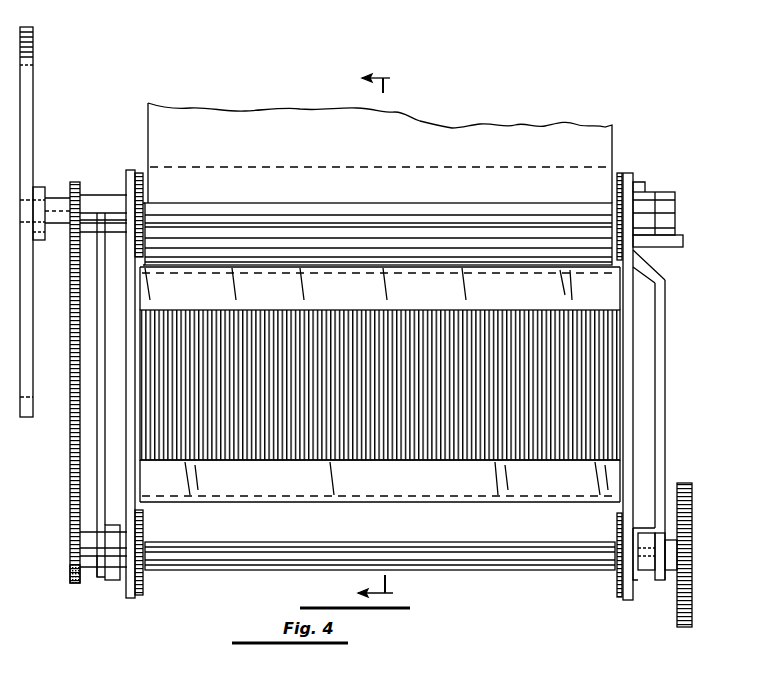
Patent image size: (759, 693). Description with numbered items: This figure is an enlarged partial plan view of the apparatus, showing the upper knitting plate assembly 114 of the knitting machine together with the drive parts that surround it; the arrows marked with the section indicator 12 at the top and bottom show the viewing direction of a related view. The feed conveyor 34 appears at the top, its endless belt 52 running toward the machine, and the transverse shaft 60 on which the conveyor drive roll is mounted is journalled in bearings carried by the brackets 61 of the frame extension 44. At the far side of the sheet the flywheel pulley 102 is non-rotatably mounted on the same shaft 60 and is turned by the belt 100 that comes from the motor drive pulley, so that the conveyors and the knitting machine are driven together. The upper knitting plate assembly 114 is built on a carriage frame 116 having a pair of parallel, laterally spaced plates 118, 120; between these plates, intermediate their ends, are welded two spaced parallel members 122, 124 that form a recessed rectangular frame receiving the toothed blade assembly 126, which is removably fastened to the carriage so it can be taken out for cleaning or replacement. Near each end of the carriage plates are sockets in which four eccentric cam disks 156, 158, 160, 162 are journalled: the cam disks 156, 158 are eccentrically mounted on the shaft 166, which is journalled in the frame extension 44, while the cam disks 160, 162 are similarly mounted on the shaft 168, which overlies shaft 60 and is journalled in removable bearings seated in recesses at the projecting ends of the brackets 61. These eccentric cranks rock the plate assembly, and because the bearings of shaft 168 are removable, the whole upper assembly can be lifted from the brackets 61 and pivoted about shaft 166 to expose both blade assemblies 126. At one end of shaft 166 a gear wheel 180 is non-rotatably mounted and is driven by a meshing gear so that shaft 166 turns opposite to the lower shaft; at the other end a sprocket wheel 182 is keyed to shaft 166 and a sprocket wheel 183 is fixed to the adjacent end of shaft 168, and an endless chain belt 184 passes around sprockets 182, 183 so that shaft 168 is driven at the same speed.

The section line / viewing direction 12 is at (389, 326).
The feed conveyor 34 is at (458, 123).
The frame extension 44 is at (97, 492).
The endless belt 52 is at (387, 145).
The shaft 60 is at (58, 208).
The brackets 61 is at (683, 241).
The belt 100 is at (27, 419).
The flywheel pulley 102 is at (34, 38).
The upper knitting plate assembly 114 is at (633, 357).
The carriage frame 116 is at (633, 400).
The plate 118 is at (633, 302).
The plate 120 is at (676, 201).
The spaced parallel member 122 is at (330, 495).
The spaced parallel member 124 is at (433, 296).
The blade assembly 126 is at (612, 343).
The cam disk 156 is at (617, 598).
The cam disk 158 is at (140, 597).
The cam disk 160 is at (620, 172).
The cam disk 162 is at (140, 172).
The shaft 166 is at (470, 549).
The shaft 168 is at (484, 214).
The gear wheel 180 is at (692, 568).
The sprocket wheel 182 is at (75, 585).
The sprocket wheel 183 is at (80, 186).
The endless chain belt 184 is at (69, 418).